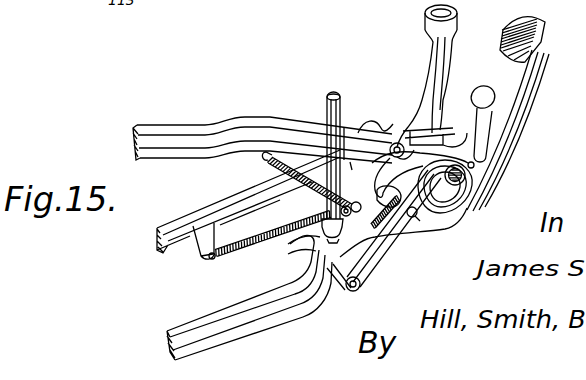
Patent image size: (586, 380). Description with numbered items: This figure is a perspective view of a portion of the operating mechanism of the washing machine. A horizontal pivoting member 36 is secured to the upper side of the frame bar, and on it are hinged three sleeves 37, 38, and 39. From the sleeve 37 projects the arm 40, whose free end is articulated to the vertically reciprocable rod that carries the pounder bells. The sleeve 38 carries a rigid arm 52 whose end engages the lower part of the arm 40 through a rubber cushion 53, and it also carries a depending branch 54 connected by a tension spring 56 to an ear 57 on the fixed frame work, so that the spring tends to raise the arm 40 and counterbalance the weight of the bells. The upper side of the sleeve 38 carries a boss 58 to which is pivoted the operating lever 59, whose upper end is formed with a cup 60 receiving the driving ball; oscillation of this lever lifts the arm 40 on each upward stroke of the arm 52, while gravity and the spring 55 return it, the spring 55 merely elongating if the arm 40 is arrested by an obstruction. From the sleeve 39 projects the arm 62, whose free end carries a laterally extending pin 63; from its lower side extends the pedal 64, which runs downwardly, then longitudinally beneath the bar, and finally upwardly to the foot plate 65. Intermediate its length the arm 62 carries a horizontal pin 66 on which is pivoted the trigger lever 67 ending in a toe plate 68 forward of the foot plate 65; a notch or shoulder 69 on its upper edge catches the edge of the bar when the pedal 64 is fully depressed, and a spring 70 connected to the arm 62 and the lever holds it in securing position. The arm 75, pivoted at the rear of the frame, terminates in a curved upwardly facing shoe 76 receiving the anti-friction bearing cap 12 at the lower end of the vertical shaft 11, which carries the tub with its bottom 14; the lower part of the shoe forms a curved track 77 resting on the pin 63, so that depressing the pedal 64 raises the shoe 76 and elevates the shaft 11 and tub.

The vertical shaft 11 is at (338, 94).
The anti-friction bearing 12 is at (312, 244).
The tub bottom 14 is at (359, 171).
The horizontal pivoting member 36 is at (462, 179).
The sleeve 37 is at (383, 125).
The sleeve 38 is at (420, 175).
The sleeve 39 is at (450, 183).
The arm 40 is at (180, 131).
The rigid arm 52 is at (351, 200).
The rubber cushion 53 is at (347, 150).
The depending branch 54 is at (385, 190).
The spring 55 is at (307, 190).
The tension spring 56 is at (267, 247).
The ear 57 is at (196, 255).
The boss 58 is at (446, 131).
The operating lever 59 is at (422, 87).
The cup 60 is at (428, 20).
The arm 62 is at (399, 202).
The pin 63 is at (353, 291).
The pedal 64 is at (509, 153).
The foot plate 65 is at (505, 26).
The horizontal pin 66 is at (423, 221).
The trigger lever 67 is at (460, 205).
The toe plate 68 is at (484, 87).
The notch or shoulder 69 is at (474, 165).
The spring 70 is at (394, 228).
The arm 75 is at (259, 332).
The shoe 76 is at (332, 240).
The curved track 77 is at (331, 278).